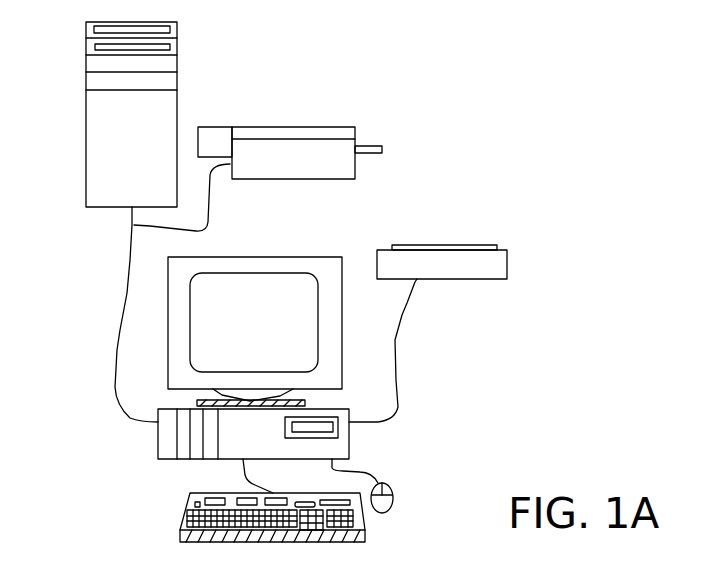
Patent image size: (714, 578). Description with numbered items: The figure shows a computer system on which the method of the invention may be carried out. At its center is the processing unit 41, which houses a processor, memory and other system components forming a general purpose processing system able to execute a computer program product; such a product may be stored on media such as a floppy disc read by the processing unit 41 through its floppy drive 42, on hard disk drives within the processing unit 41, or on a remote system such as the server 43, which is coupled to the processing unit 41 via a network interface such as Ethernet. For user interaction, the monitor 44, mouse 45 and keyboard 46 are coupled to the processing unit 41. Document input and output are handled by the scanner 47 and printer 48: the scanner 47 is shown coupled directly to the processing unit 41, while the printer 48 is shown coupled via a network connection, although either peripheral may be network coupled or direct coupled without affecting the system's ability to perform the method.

The processing unit 41 is at (158, 440).
The floppy drive 42 is at (342, 412).
The server 43 is at (177, 105).
The monitor 44 is at (304, 240).
The mouse 45 is at (388, 512).
The keyboard 46 is at (183, 520).
The scanner 47 is at (330, 127).
The printer 48 is at (470, 228).